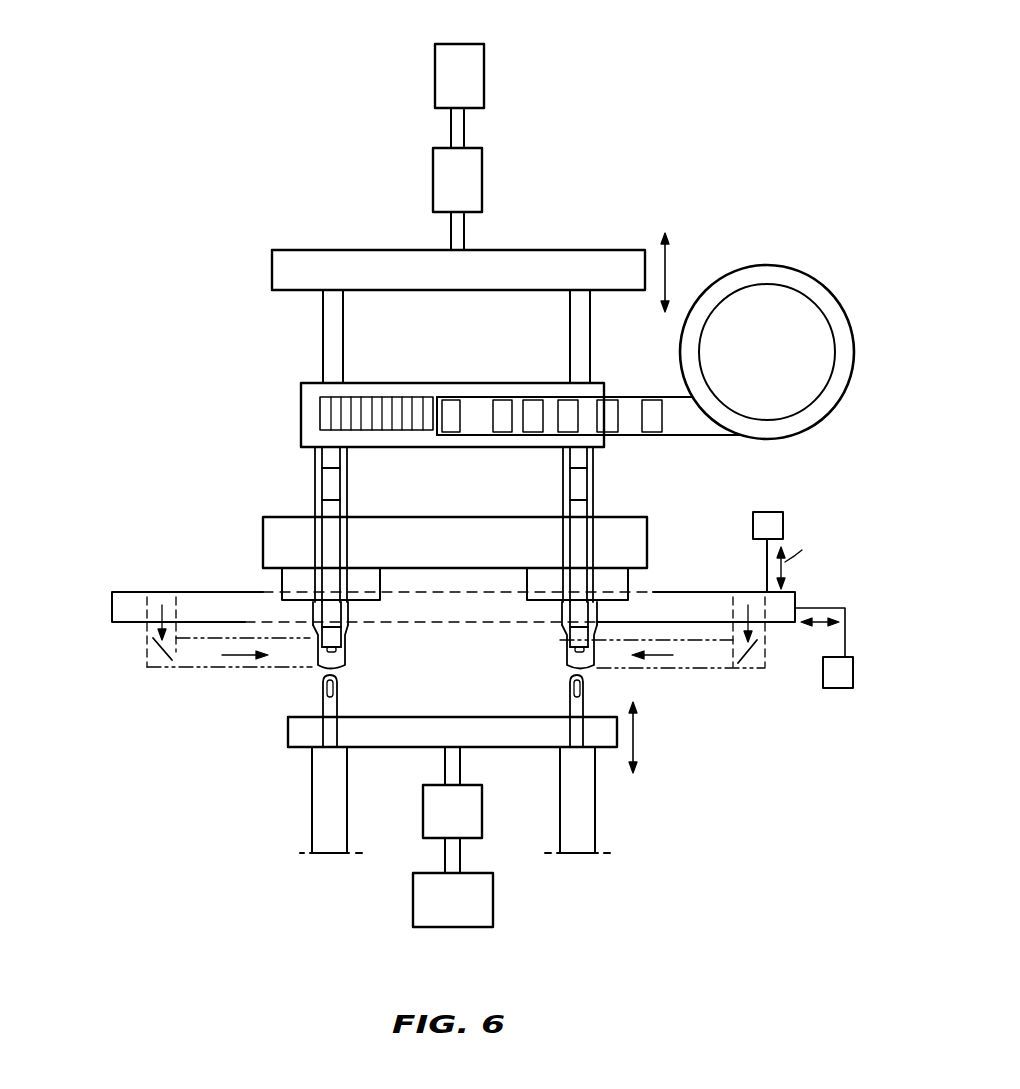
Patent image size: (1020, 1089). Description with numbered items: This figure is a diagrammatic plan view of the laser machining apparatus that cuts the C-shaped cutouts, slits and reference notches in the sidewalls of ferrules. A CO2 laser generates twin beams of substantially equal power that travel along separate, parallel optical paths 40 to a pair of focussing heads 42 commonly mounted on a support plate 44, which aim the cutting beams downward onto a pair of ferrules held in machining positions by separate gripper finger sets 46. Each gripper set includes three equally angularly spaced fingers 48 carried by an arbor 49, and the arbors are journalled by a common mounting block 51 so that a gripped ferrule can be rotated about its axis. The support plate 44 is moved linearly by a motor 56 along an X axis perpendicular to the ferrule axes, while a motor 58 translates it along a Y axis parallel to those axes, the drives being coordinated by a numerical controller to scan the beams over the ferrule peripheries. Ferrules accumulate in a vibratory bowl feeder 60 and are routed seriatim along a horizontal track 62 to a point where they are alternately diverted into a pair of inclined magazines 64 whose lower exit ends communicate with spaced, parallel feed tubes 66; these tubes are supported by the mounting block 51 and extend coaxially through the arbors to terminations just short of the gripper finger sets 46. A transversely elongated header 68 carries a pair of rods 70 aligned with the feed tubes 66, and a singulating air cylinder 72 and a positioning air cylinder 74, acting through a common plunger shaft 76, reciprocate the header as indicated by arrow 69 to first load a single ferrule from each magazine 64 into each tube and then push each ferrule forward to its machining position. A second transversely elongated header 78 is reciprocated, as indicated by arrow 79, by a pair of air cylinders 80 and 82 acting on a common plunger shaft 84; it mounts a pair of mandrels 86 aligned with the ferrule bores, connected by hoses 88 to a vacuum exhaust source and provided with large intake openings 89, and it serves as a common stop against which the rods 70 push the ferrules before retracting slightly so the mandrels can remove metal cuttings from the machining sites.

The optical paths 40 is at (238, 655).
The focussing heads 42 is at (347, 647).
The support plate 44 is at (703, 602).
The gripper finger sets 46 is at (362, 631).
The fingers 48 is at (348, 617).
The arbor 49 is at (382, 580).
The mounting block 51 is at (465, 530).
The motor 56 is at (825, 683).
The motor 58 is at (782, 512).
The vibratory bowl feeder 60 is at (775, 267).
The horizontal track 62 is at (615, 397).
The inclined magazines 64 is at (377, 397).
The feed tubes 66 is at (347, 492).
The header 68 is at (545, 265).
The arrow 69 is at (668, 277).
The rods 70 is at (335, 312).
The singulating air cylinder 72 is at (478, 53).
The positioning air cylinder 74 is at (482, 182).
The plunger shaft 76 is at (463, 238).
The header 78 is at (487, 717).
The arrow 79 is at (637, 743).
The air cylinder 80 is at (473, 807).
The air cylinder 82 is at (480, 910).
The plunger shaft 84 is at (460, 862).
The mandrels 86 is at (337, 703).
The hoses 88 is at (330, 817).
The intake openings 89 is at (333, 687).